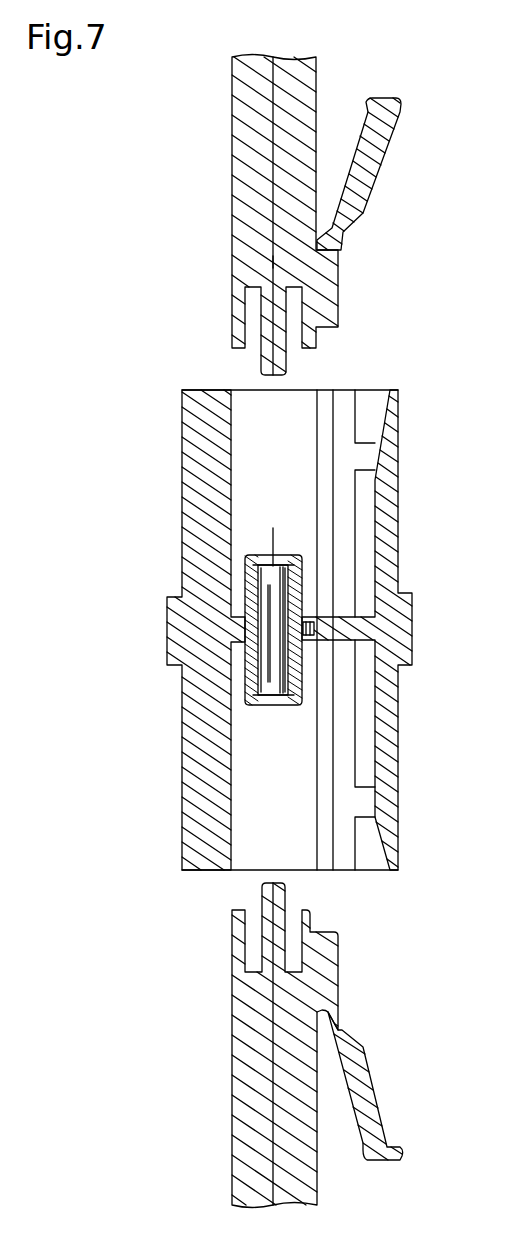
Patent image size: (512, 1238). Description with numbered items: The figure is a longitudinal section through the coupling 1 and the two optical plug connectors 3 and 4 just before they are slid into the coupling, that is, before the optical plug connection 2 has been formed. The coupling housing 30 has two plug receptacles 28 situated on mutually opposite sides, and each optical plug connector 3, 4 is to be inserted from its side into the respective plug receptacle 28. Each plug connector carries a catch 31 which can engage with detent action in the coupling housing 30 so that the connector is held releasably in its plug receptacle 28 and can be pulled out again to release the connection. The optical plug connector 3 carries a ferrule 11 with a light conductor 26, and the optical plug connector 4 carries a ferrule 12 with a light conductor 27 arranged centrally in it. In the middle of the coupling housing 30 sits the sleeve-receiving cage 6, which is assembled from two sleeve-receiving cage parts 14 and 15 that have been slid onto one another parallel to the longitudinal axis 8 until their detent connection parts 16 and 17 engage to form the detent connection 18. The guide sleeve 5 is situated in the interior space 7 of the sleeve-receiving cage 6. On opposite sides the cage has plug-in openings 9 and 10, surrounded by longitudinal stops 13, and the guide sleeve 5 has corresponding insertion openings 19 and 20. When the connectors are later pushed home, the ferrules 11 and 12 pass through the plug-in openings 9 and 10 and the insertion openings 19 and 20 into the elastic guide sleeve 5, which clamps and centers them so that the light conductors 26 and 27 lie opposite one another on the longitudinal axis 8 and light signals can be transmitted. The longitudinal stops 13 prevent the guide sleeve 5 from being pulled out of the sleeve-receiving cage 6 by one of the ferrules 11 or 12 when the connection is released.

The coupling 1 is at (381, 490).
The optical plug connection 2 is at (412, 532).
The optical plug connector 3 is at (290, 82).
The optical plug connector 4 is at (298, 1166).
The guide sleeve 5 is at (257, 681).
The sleeve-receiving cage 6 is at (299, 592).
The interior space 7 is at (270, 630).
The longitudinal axis 8 is at (283, 705).
The plug-in opening 9 is at (282, 556).
The plug-in opening 10 is at (262, 706).
The ferrule 11 is at (282, 322).
The ferrule 12 is at (280, 922).
The longitudinal stop 13 is at (289, 563).
The sleeve-receiving cage part 14 is at (255, 590).
The sleeve-receiving cage part 15 is at (293, 662).
The detent connection part 16 is at (318, 633).
The detent connection part 17 is at (313, 624).
The detent connection 18 is at (317, 632).
The insertion opening 19 is at (265, 562).
The insertion opening 20 is at (268, 700).
The light conductor 26 is at (275, 262).
The light conductor 27 is at (262, 899).
The plug receptacle 28 is at (300, 430).
The coupling housing 30 is at (376, 786).
The catch 31 is at (368, 152).